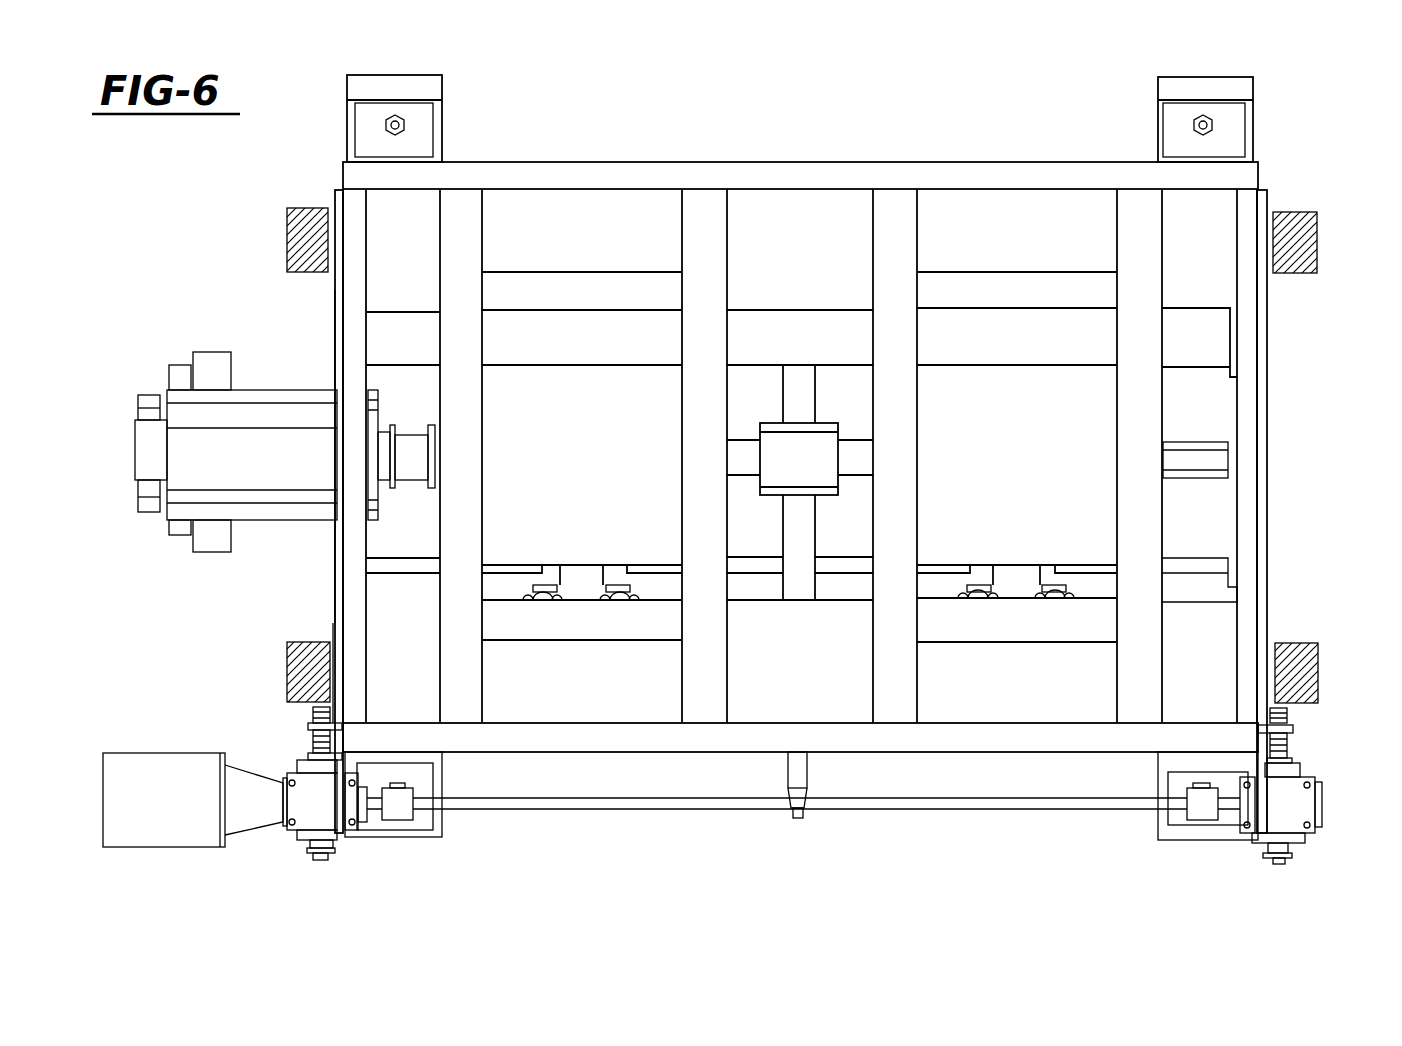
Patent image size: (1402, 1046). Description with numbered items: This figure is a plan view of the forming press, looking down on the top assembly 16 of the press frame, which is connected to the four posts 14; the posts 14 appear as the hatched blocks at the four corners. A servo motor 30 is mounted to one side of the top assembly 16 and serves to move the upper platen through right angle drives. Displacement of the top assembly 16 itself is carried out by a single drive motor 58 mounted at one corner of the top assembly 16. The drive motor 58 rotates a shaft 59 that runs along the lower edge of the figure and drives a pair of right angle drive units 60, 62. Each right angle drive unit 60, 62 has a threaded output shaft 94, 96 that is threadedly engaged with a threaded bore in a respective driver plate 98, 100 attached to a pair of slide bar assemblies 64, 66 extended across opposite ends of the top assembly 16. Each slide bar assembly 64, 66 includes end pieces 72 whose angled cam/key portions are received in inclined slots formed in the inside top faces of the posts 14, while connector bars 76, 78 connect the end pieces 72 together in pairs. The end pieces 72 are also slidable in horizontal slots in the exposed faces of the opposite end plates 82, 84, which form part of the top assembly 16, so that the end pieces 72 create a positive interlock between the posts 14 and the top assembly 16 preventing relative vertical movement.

The top assembly 16 is at (732, 157).
The posts 14 is at (282, 238).
The end plate 82 is at (362, 243).
The end plate 84 is at (1242, 240).
The servo motor 30 is at (253, 385).
The slide bar assembly 64 is at (335, 538).
The connector bar 76 is at (337, 565).
The connector bar 78 is at (1277, 635).
The slide bar assembly 66 is at (1292, 515).
The end piece 72 is at (328, 640).
The driver plate 98 is at (305, 727).
The threaded output shaft 94 is at (305, 745).
The driver plate 100 is at (1295, 730).
The threaded output shaft 96 is at (1292, 742).
The drive motor 58 is at (148, 852).
The right angle drive unit 60 is at (296, 840).
The shaft 59 is at (708, 815).
The right angle drive unit 62 is at (1312, 842).